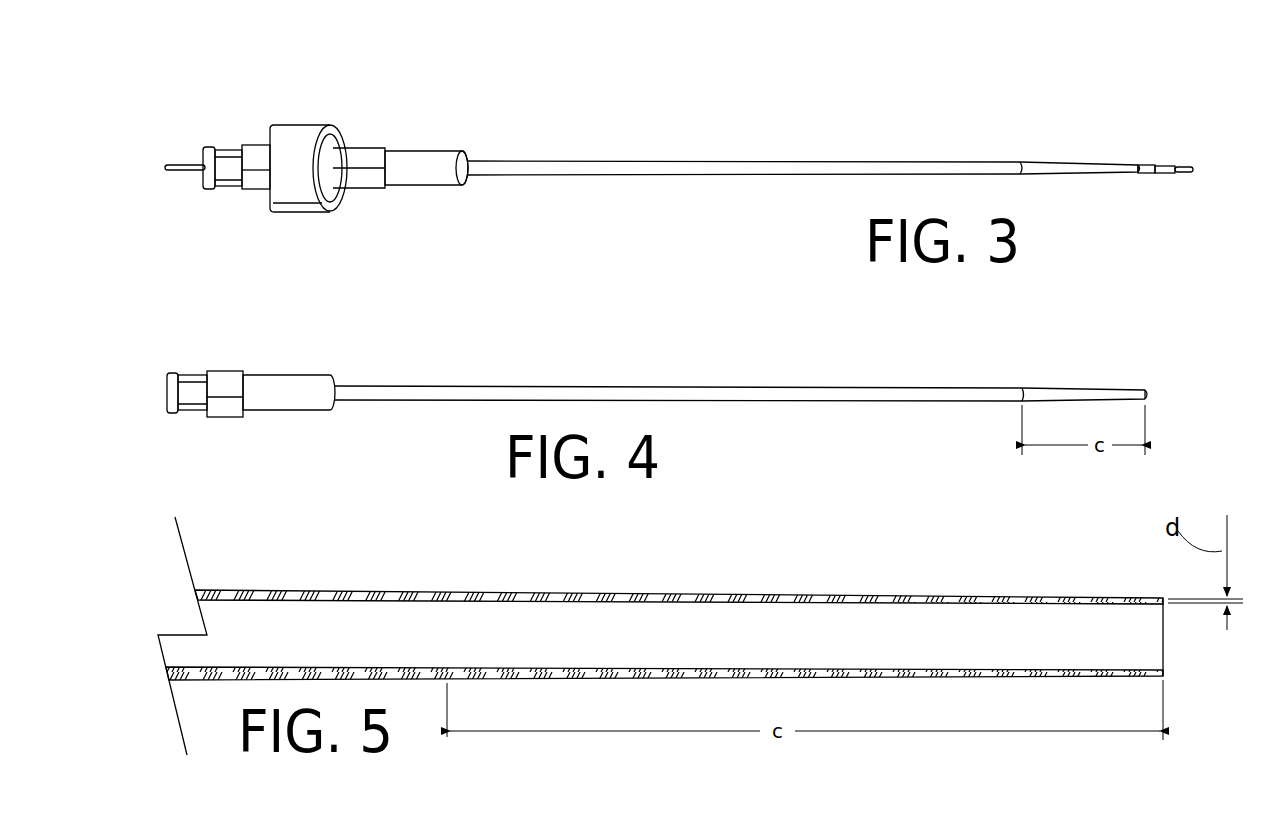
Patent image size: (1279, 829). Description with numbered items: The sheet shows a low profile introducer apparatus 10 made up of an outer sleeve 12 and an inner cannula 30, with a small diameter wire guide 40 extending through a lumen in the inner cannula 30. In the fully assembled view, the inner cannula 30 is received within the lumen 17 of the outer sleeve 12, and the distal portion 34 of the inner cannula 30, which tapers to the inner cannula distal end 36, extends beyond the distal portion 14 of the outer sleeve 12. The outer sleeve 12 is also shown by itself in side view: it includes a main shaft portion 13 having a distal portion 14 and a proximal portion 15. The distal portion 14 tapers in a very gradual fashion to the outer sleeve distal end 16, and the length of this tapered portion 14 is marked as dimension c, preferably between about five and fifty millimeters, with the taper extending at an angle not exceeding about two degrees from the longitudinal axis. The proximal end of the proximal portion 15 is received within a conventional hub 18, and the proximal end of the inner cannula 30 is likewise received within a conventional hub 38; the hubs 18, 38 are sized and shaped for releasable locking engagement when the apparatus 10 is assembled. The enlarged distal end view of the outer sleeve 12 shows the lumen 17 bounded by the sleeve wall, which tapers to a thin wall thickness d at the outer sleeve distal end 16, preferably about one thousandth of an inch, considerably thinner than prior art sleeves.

In FIG. 3, the introducer apparatus 10 is at (676, 111).
In FIG. 3, the outer sleeve 12 is at (591, 158).
In FIG. 4, the outer sleeve 12 is at (727, 383).
In FIG. 5, the outer sleeve 12 is at (351, 568).
In FIG. 3, the main shaft portion 13 is at (963, 162).
In FIG. 4, the main shaft portion 13 is at (676, 386).
In FIG. 3, the distal portion 14 is at (1085, 163).
In FIG. 4, the distal portion 14 is at (1085, 388).
In FIG. 5, the distal portion 14 is at (818, 593).
In FIG. 4, the proximal portion 15 is at (350, 383).
In FIG. 3, the outer sleeve distal end 16 is at (1148, 177).
In FIG. 4, the outer sleeve distal end 16 is at (1150, 395).
In FIG. 5, the outer sleeve distal end 16 is at (1163, 637).
In FIG. 5, the lumen 17 is at (892, 626).
In FIG. 3, the hub 18 is at (530, 160).
In FIG. 4, the hub 18 is at (250, 372).
In FIG. 3, the inner cannula 30 is at (1151, 163).
In FIG. 3, the distal portion 34 is at (1164, 166).
In FIG. 3, the inner cannula distal end 36 is at (1186, 168).
In FIG. 3, the hub 38 is at (307, 125).
In FIG. 3, the wire guide 40 is at (184, 166).